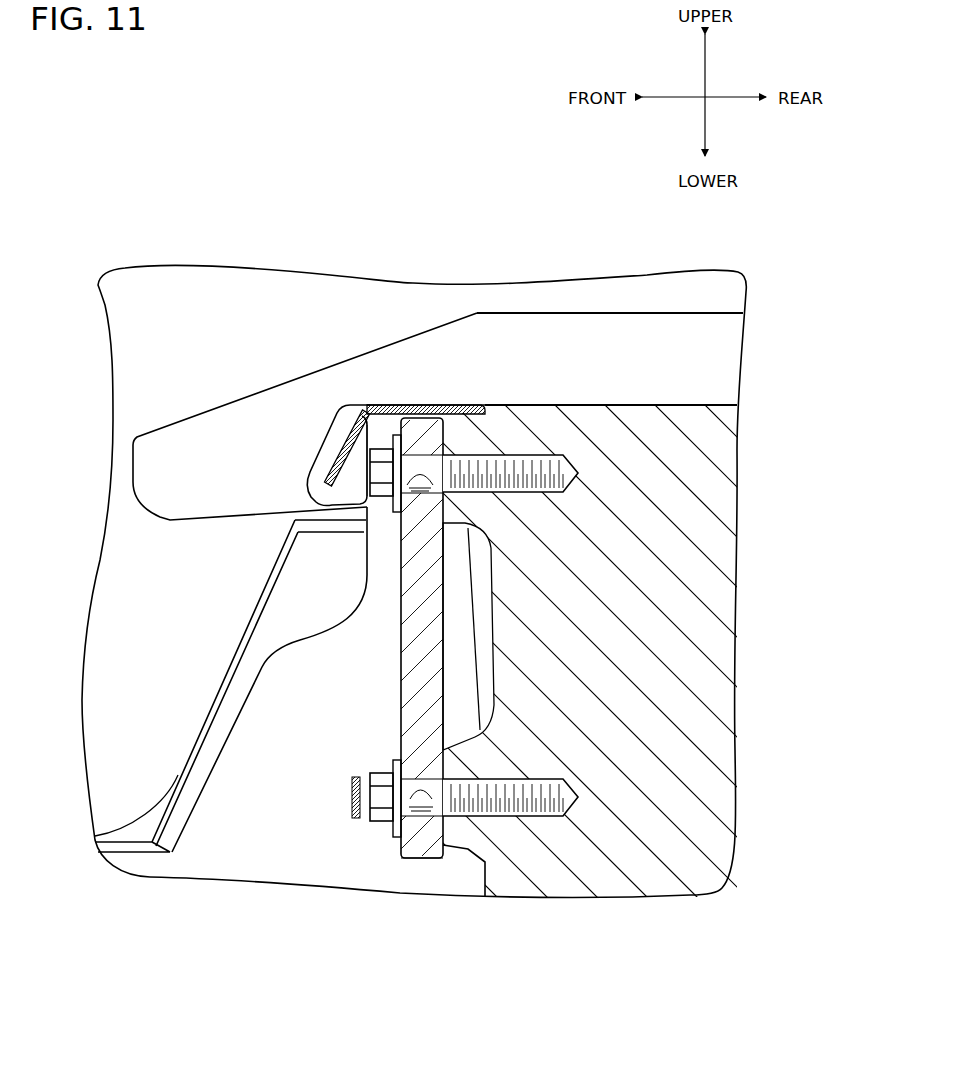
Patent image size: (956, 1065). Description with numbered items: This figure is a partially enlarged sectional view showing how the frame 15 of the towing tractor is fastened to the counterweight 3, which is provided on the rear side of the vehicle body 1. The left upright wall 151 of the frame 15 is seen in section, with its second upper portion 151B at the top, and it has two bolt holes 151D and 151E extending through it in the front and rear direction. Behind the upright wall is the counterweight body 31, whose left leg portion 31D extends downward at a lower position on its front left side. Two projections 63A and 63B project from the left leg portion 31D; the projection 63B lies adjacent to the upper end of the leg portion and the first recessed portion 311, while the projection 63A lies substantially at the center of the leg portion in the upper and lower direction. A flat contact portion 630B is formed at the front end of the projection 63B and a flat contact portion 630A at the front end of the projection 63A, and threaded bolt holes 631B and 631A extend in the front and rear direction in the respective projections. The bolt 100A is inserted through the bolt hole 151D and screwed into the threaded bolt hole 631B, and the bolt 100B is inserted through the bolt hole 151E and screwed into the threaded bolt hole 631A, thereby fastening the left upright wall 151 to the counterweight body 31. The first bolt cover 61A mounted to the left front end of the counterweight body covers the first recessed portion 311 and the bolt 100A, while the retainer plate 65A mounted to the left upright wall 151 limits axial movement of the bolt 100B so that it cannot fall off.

The vehicle body 1 is at (150, 768).
The counterweight 3 is at (630, 298).
The counterweight body 31 is at (198, 413).
The first recessed portion 311 is at (384, 437).
The left leg portion 31D is at (583, 868).
The frame 15 is at (243, 665).
The left upright wall 151 is at (425, 682).
The second upper portion 151B is at (420, 410).
The bolt hole 151D is at (364, 523).
The bolt hole 151E is at (427, 795).
The first bolt cover 61A is at (338, 470).
The projection 63A is at (465, 845).
The projection 63B is at (457, 437).
The flat contact portion 630A is at (420, 848).
The flat contact portion 630B is at (425, 540).
The threaded bolt hole 631A is at (600, 830).
The threaded bolt hole 631B is at (572, 480).
The bolt 100A is at (383, 474).
The bolt 100B is at (383, 803).
The retainer plate 65A is at (350, 796).